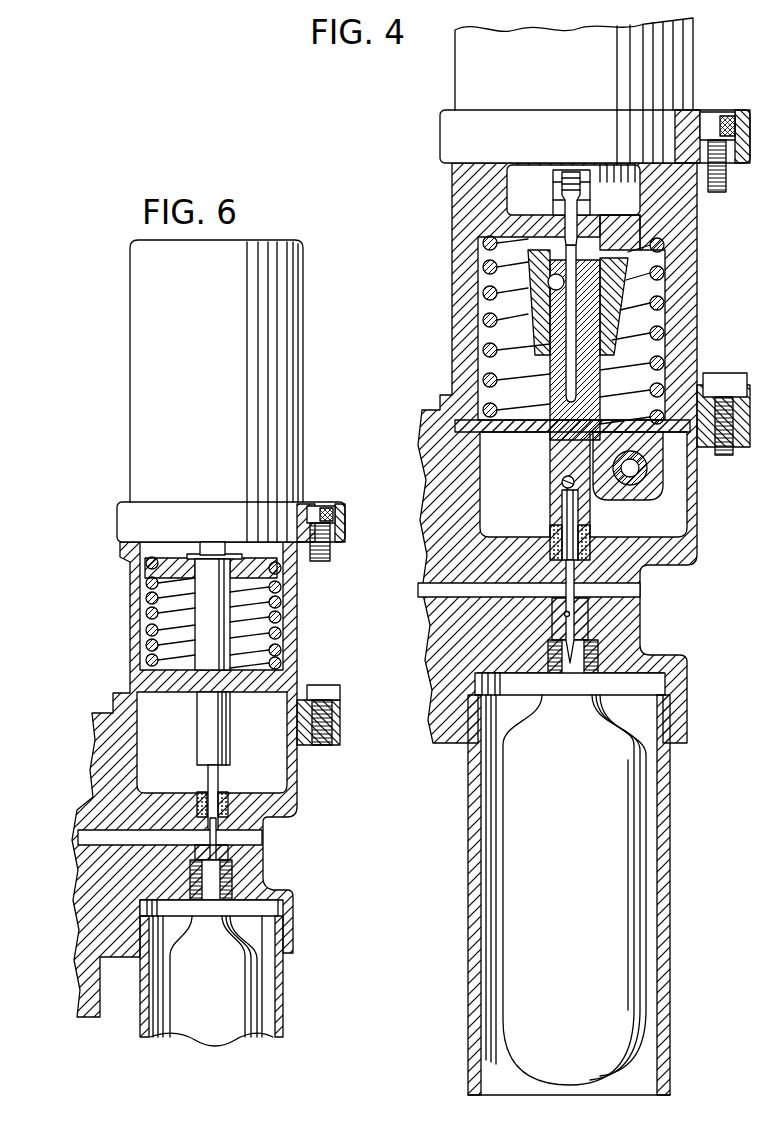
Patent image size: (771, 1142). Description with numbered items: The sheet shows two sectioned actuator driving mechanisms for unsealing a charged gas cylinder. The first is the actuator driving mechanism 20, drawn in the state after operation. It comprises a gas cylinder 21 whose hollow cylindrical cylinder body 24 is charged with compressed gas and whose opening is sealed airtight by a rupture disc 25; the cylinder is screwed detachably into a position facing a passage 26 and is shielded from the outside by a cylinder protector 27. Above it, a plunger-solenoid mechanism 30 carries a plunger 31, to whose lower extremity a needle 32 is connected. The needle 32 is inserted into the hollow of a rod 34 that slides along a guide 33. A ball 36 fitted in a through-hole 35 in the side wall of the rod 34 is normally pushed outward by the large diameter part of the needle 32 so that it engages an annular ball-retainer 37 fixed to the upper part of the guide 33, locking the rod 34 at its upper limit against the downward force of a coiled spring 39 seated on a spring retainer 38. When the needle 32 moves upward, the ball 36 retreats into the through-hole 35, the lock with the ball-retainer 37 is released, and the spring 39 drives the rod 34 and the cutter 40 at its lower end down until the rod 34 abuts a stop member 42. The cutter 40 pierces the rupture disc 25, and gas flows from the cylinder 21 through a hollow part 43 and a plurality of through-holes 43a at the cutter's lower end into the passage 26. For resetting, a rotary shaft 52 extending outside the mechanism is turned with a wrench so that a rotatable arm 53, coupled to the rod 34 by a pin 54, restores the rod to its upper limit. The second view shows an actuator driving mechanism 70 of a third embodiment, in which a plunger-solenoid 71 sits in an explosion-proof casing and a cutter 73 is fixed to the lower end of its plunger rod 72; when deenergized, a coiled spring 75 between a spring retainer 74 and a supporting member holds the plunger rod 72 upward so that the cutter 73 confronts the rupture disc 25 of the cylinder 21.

In FIG. 4, the actuator driving mechanism 20 is at (437, 87).
In FIG. 4, the gas cylinder 21 is at (642, 779).
In FIG. 6, the gas cylinder 21 is at (268, 988).
In FIG. 4, the cylinder body 24 is at (626, 823).
In FIG. 6, the cylinder body 24 is at (247, 1018).
In FIG. 4, the rupture disc 25 is at (569, 670).
In FIG. 6, the rupture disc 25 is at (212, 895).
In FIG. 4, the passage 26 is at (460, 592).
In FIG. 6, the passage 26 is at (95, 841).
In FIG. 4, the cylinder protector 27 is at (668, 868).
In FIG. 6, the cylinder protector 27 is at (284, 968).
In FIG. 4, the plunger-solenoid mechanism 30 is at (684, 62).
In FIG. 4, the plunger 31 is at (571, 172).
In FIG. 4, the needle 32 is at (550, 198).
In FIG. 4, the guide 33 is at (566, 335).
In FIG. 4, the rod 34 is at (550, 371).
In FIG. 4, the through-hole 35 is at (550, 282).
In FIG. 4, the ball 36 is at (535, 290).
In FIG. 4, the ball-retainer 37 is at (616, 232).
In FIG. 4, the spring retainer 38 is at (513, 432).
In FIG. 4, the coiled spring 39 is at (664, 362).
In FIG. 4, the cutter 40 is at (643, 577).
In FIG. 4, the stop member 42 is at (553, 530).
In FIG. 4, the hollow part 43 is at (586, 650).
In FIG. 4, the through-holes 43a is at (572, 614).
In FIG. 4, the rotary shaft 52 is at (640, 468).
In FIG. 4, the rotatable arm 53 is at (600, 508).
In FIG. 4, the pin 54 is at (590, 488).
In FIG. 6, the actuator driving mechanism 70 is at (108, 321).
In FIG. 6, the plunger-solenoid 71 is at (303, 346).
In FIG. 6, the plunger rod 72 is at (224, 641).
In FIG. 6, the cutter 73 is at (220, 772).
In FIG. 6, the spring retainer 74 is at (180, 558).
In FIG. 6, the coiled spring 75 is at (150, 614).